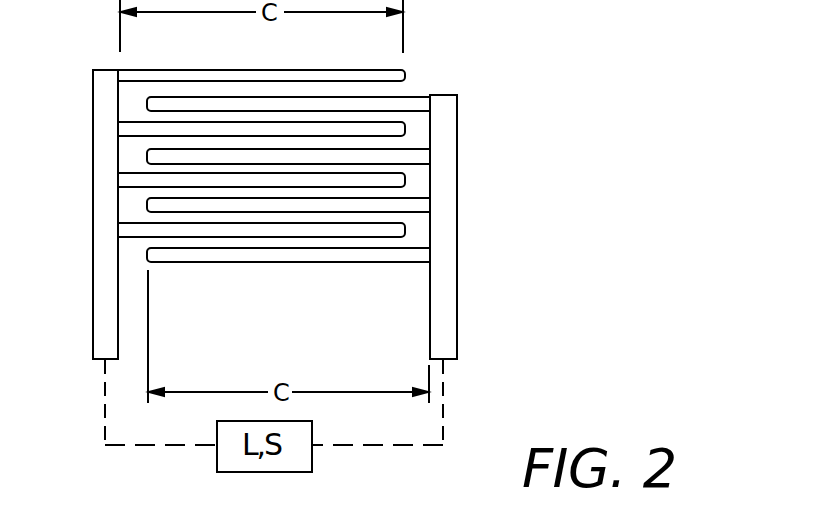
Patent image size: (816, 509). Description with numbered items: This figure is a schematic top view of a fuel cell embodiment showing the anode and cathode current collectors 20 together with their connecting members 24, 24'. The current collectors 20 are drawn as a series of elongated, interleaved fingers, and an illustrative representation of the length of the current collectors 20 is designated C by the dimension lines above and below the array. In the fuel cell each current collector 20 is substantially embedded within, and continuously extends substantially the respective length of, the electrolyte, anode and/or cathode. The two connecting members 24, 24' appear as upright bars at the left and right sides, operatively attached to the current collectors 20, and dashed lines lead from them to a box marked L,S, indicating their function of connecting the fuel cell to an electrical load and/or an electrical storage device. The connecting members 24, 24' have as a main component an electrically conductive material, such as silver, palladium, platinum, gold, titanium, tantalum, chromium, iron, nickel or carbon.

The current collector 20 is at (198, 69).
The connecting member 24 is at (81, 214).
The connecting member 24' is at (503, 227).